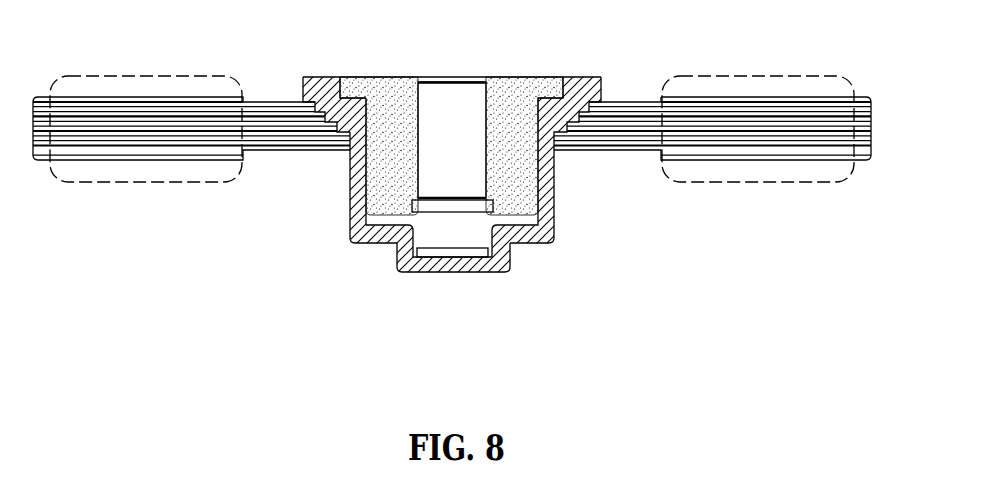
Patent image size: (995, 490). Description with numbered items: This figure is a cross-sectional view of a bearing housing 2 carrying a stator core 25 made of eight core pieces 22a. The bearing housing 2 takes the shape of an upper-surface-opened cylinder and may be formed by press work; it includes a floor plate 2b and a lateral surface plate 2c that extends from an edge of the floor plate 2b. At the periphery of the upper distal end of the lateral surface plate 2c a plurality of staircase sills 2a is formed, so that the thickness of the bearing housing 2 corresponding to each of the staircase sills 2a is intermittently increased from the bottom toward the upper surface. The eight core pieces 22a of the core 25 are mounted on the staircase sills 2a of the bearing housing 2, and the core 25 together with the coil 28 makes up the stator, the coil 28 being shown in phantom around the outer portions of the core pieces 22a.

The bearing housing 2 is at (443, 219).
The staircase sills 2a is at (332, 124).
The floor plate 2b is at (375, 238).
The lateral surface plate 2c is at (350, 199).
The core 25 is at (637, 115).
The core pieces 22a is at (613, 143).
The coil 28 is at (770, 183).